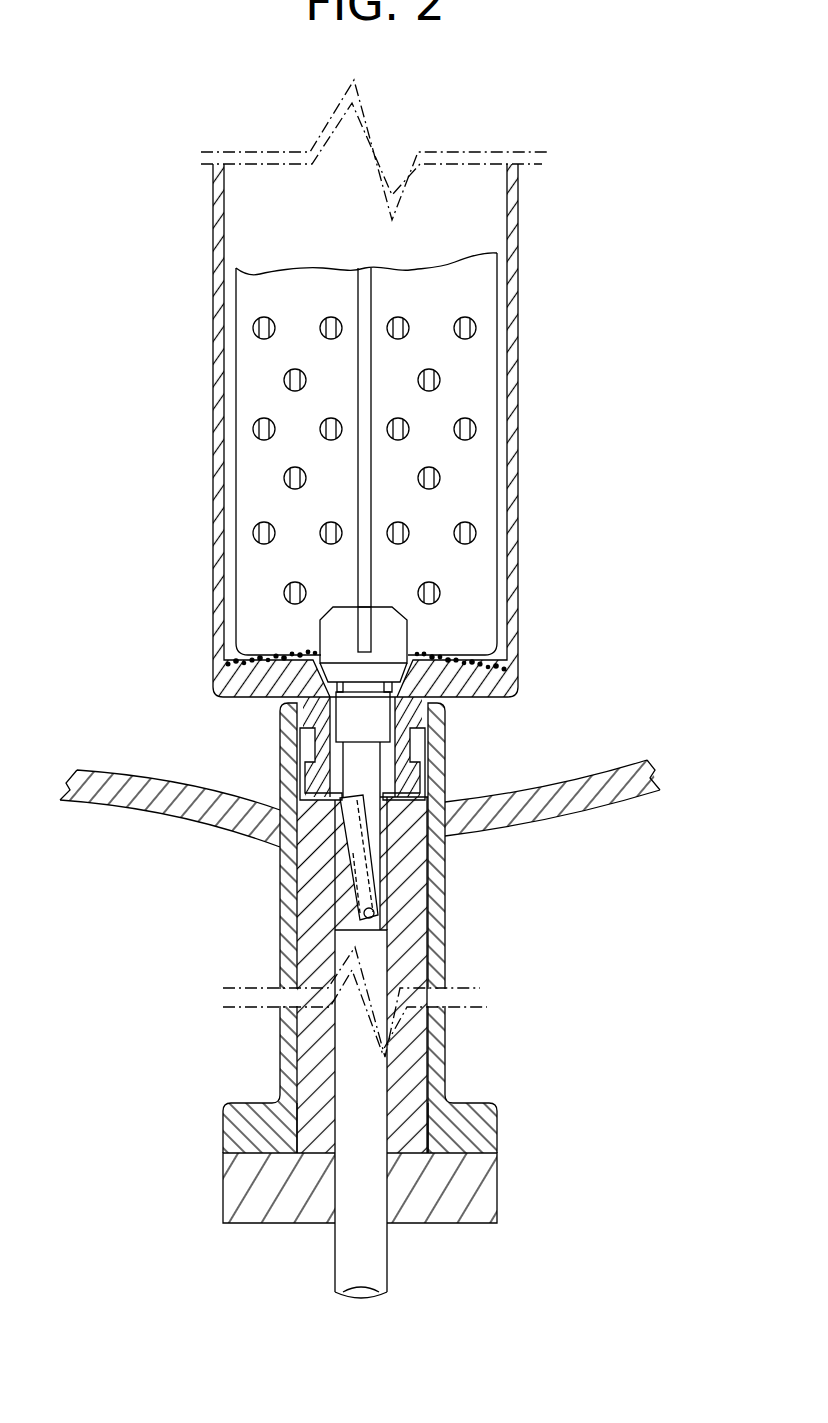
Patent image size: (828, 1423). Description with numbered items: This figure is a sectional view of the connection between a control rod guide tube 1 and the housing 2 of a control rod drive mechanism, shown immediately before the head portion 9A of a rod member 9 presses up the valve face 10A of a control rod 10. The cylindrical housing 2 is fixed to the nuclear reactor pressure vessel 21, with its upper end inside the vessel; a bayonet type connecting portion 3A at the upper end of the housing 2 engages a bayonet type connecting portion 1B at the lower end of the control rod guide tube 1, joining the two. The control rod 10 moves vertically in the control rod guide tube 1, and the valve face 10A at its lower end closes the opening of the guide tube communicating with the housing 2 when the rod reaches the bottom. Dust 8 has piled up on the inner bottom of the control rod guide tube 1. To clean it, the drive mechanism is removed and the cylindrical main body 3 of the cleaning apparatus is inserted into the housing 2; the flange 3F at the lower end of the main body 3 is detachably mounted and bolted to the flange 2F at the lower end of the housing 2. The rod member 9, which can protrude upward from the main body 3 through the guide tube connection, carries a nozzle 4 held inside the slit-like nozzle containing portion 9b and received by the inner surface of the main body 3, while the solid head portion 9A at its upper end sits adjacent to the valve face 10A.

The control rod guide tube 1 is at (513, 525).
The bayonet type connecting portion 1B is at (315, 780).
The housing 2 is at (445, 1030).
The flange 2F is at (497, 1128).
The main body 3 is at (312, 882).
The bayonet type connecting portion 3A is at (300, 740).
The flange 3F is at (497, 1193).
The nozzle 4 is at (367, 840).
The dust 8 is at (213, 663).
The rod member 9 is at (375, 1268).
The head portion 9A is at (370, 705).
The nozzle containing portion 9b is at (378, 862).
The control rod 10 is at (482, 364).
The valve face 10A is at (370, 677).
The nuclear reactor pressure vessel 21 is at (647, 790).